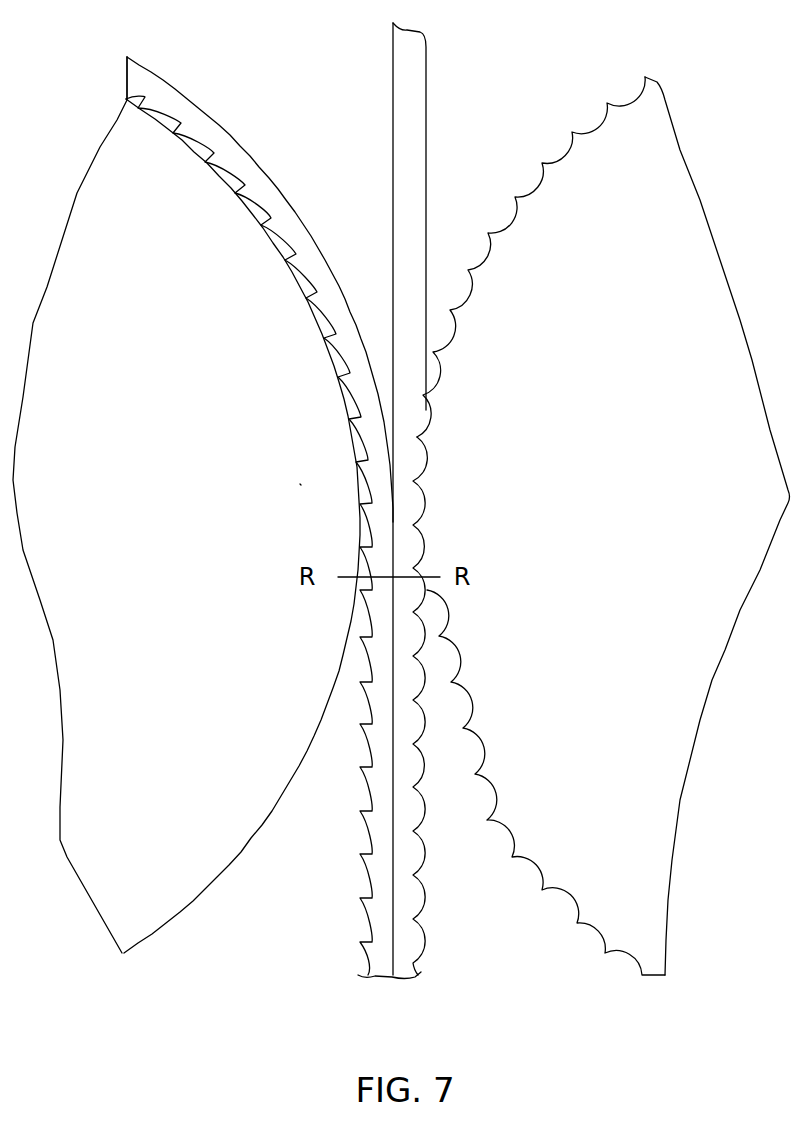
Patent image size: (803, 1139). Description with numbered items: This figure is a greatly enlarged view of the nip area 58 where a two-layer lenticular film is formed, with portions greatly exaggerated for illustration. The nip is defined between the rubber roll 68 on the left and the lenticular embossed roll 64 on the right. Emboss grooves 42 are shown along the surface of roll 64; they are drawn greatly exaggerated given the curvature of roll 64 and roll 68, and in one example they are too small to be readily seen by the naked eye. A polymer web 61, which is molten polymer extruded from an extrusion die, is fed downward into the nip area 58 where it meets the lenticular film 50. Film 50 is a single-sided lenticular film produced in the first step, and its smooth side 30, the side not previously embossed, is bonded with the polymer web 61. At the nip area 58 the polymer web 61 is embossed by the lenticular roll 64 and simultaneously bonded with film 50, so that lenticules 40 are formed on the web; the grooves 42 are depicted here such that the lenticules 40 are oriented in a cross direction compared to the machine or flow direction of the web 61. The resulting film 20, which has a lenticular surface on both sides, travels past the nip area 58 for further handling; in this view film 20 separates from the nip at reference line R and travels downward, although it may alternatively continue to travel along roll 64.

The film 20 is at (325, 940).
The smooth side 30 is at (238, 96).
The lenticules 40 is at (260, 203).
The emboss grooves 42 is at (592, 113).
The lenticular film 50 is at (168, 98).
The nip area 58 is at (300, 484).
The polymer web 61 is at (422, 76).
The lenticular embossed roll 64 is at (655, 341).
The rubber roll 68 is at (213, 359).